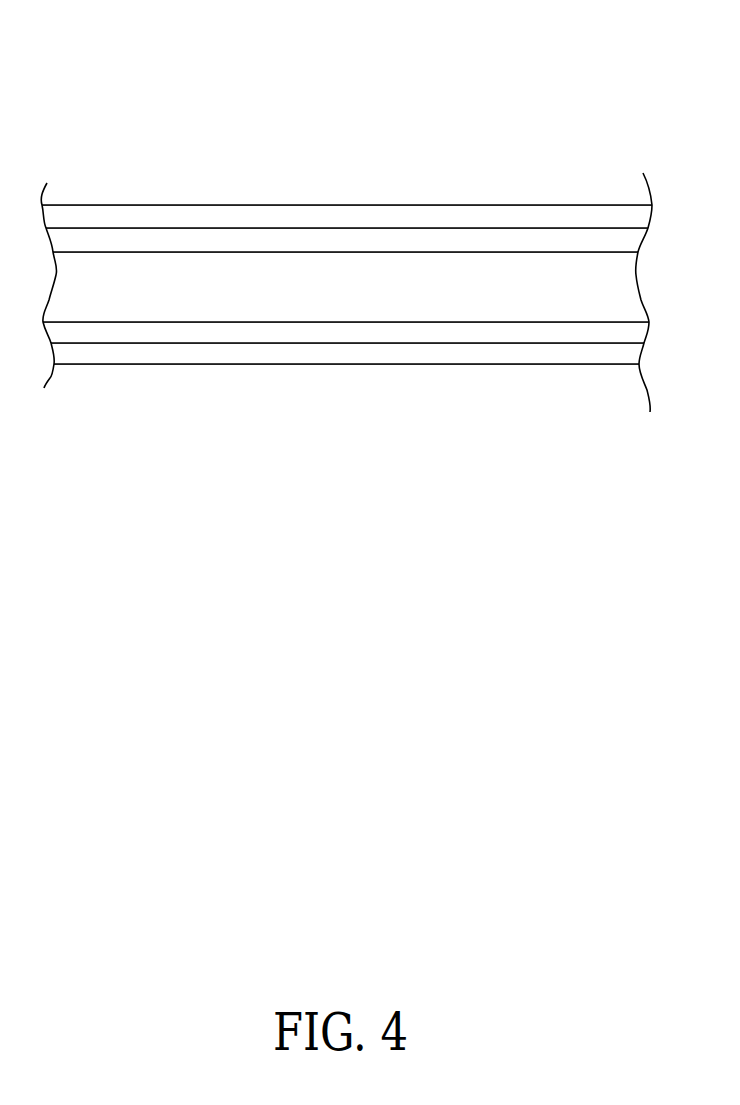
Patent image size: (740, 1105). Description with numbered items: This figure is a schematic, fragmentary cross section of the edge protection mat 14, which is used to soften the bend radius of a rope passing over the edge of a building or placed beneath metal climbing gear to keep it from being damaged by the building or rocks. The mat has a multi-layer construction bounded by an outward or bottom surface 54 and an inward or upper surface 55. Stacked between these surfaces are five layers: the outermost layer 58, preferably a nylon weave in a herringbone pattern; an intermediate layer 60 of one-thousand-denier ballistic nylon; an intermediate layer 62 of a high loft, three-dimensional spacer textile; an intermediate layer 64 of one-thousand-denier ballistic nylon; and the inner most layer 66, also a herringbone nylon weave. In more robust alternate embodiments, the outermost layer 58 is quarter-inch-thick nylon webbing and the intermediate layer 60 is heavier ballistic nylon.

The edge protection mat 14 is at (560, 98).
The bottom surface 54 is at (260, 367).
The upper surface 55 is at (473, 203).
The outermost layer 58 is at (351, 354).
The intermediate layer 60 is at (467, 328).
The intermediate layer 62 is at (408, 301).
The intermediate layer 64 is at (398, 242).
The inner most layer 66 is at (308, 215).